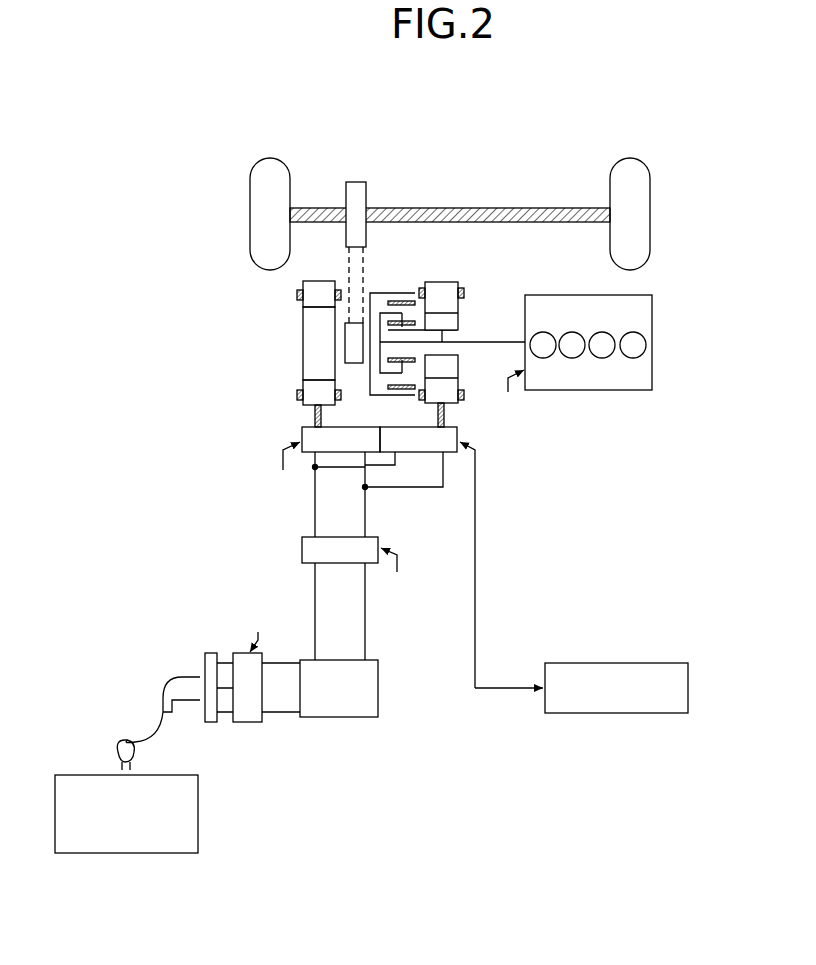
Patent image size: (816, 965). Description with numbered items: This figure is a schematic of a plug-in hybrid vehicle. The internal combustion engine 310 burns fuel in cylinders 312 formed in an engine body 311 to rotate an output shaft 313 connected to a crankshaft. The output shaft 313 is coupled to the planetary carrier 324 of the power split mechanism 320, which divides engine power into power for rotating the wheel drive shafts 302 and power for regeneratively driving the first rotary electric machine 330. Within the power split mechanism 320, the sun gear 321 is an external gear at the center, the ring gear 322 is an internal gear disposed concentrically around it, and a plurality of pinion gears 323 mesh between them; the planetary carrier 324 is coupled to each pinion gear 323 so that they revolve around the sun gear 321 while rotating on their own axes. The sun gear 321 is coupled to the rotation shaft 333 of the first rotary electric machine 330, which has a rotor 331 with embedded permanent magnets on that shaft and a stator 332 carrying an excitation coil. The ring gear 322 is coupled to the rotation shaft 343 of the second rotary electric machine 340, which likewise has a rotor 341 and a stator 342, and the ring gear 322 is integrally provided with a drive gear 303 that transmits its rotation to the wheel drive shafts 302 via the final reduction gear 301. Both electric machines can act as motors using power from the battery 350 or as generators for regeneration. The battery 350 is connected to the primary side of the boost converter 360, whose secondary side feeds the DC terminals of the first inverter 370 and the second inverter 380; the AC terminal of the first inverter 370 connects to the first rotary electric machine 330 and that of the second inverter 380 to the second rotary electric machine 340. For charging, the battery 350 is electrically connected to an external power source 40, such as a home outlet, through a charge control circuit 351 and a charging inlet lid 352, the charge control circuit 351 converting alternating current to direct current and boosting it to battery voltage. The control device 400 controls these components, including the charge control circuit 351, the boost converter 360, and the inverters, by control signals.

The external power source 40 is at (200, 812).
The final reduction gear 301 is at (356, 181).
The wheel drive shafts 302 is at (325, 205).
The drive gear 303 is at (354, 364).
The internal combustion engine 310 is at (628, 340).
The engine body 311 is at (640, 318).
The cylinders 312 is at (640, 356).
The output shaft 313 is at (500, 340).
The power split mechanism 320 is at (442, 237).
The sun gear 321 is at (430, 292).
The ring gear 322 is at (378, 292).
The pinion gear 323 is at (400, 323).
The planetary carrier 324 is at (408, 302).
The first rotary electric machine 330 is at (510, 289).
The rotor 331 is at (458, 312).
The stator 332 is at (458, 300).
The rotation shaft 333 is at (458, 345).
The second rotary electric machine 340 is at (252, 354).
The rotor 341 is at (302, 334).
The stator 342 is at (302, 392).
The rotation shaft 343 is at (302, 326).
The battery 350 is at (380, 684).
The charge control circuit 351 is at (248, 722).
The charging inlet lid 352 is at (212, 722).
The boost converter 360 is at (300, 545).
The first inverter 370 is at (460, 432).
The second inverter 380 is at (300, 432).
The control device 400 is at (690, 686).